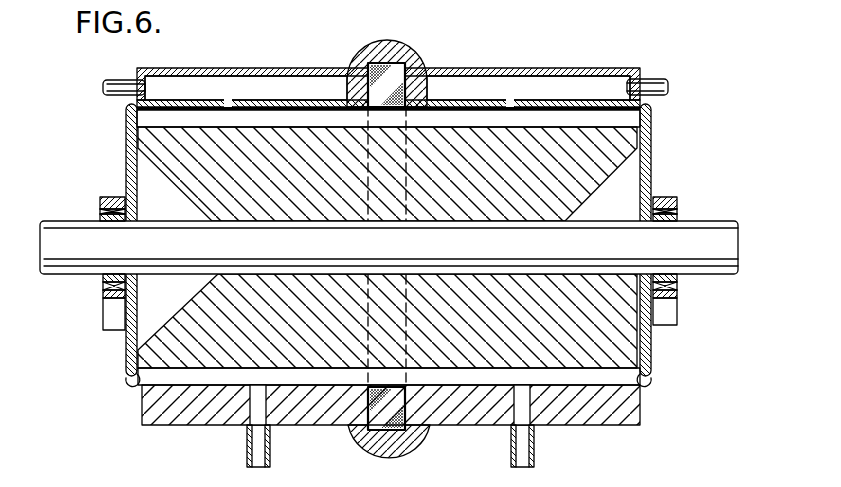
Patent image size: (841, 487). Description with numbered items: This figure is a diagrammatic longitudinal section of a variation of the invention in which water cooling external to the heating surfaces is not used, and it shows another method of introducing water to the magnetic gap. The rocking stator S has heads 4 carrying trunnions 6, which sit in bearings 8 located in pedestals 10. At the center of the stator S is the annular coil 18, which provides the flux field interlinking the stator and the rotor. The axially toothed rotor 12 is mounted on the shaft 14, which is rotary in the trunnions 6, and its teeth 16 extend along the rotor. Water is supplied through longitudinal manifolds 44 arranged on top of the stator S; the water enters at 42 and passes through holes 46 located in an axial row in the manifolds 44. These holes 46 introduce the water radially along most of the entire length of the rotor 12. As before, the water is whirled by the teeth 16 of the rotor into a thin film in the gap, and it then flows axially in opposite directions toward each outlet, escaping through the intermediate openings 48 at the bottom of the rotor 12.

The heads 4 is at (128, 148).
The trunnions 6 is at (102, 218).
The bearings 8 is at (102, 198).
The pedestals 10 is at (105, 322).
The toothed rotor 12 is at (190, 339).
The shaft 14 is at (512, 248).
The teeth 16 is at (598, 118).
The annular coil 18 is at (373, 66).
The water inlet 42 is at (122, 86).
The longitudinal manifolds 44 is at (236, 82).
The holes 46 is at (228, 101).
The intermediate openings 48 is at (258, 402).
The stator S is at (468, 68).